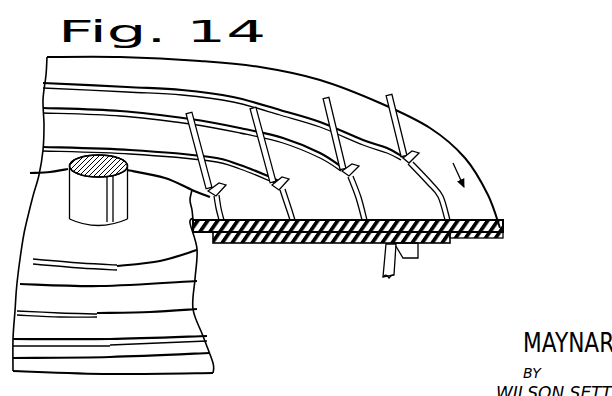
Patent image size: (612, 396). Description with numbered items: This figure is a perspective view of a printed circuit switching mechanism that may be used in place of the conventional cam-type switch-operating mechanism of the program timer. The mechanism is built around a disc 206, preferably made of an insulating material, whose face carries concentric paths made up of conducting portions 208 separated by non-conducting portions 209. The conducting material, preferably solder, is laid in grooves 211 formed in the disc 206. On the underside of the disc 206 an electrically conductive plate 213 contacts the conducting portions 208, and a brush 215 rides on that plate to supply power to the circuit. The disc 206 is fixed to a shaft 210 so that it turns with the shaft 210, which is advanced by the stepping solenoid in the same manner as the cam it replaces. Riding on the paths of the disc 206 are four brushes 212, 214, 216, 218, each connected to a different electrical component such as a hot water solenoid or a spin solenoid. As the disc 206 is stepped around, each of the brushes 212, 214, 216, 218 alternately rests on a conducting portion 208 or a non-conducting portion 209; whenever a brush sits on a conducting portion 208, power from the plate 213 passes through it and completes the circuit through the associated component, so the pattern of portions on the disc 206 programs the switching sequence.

The disc 206 is at (505, 227).
The conducting portions 208 is at (180, 90).
The non-conducting portions 209 is at (266, 106).
The shaft 210 is at (108, 203).
The grooves 211 is at (201, 250).
The brush 212 is at (186, 113).
The electrically conductive plate 213 is at (437, 245).
The brush 214 is at (250, 112).
The brush 215 is at (404, 277).
The brush 216 is at (331, 112).
The brush 218 is at (393, 101).